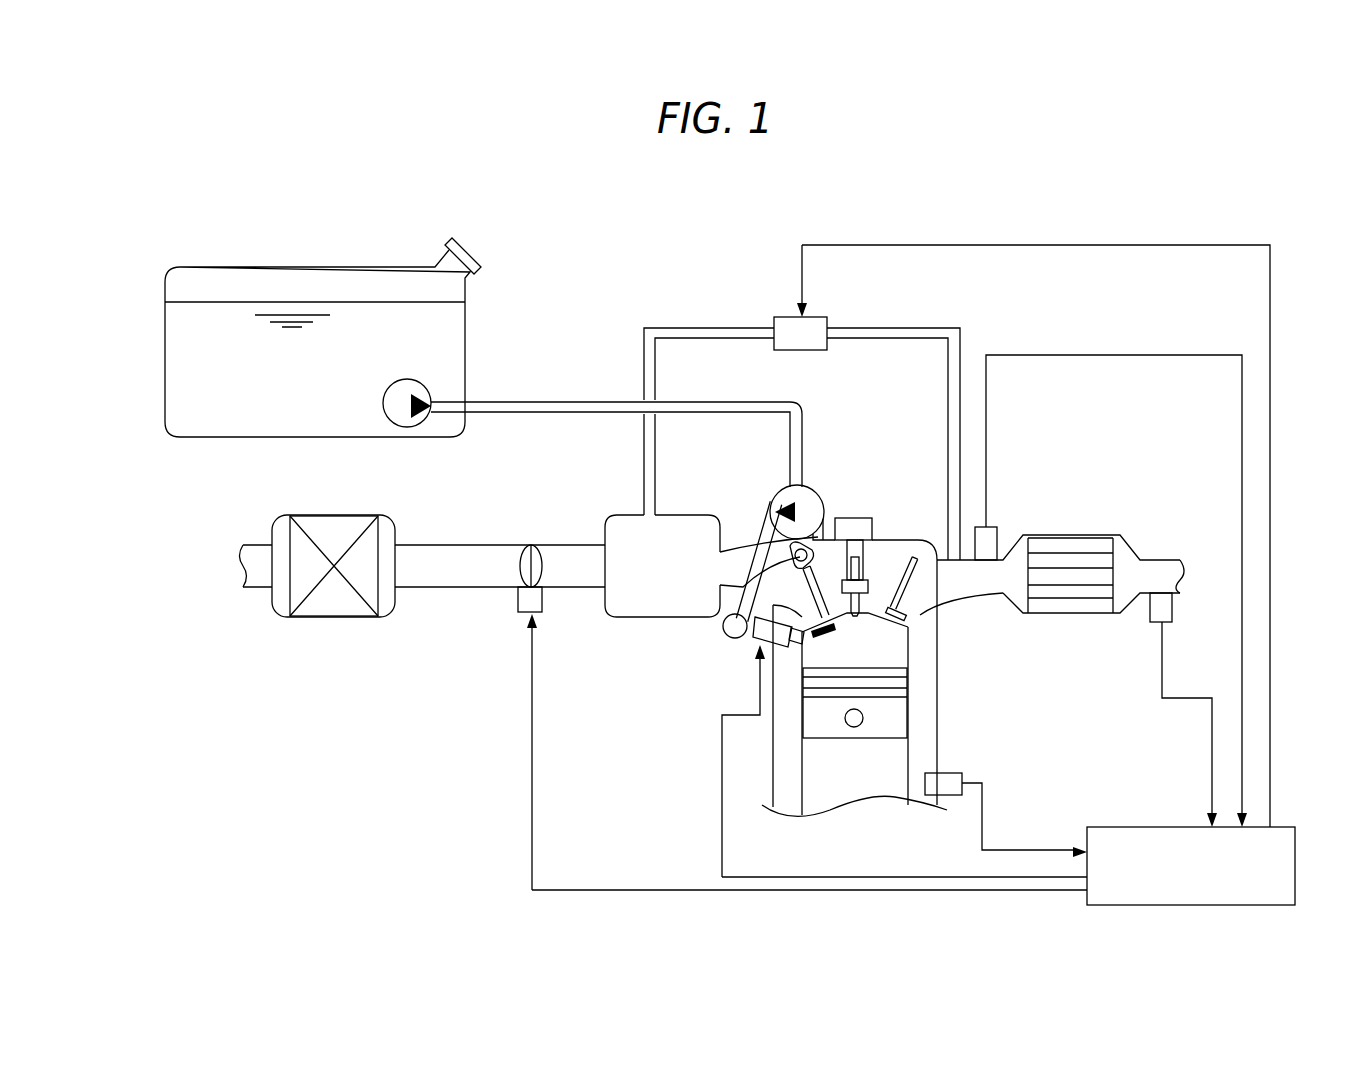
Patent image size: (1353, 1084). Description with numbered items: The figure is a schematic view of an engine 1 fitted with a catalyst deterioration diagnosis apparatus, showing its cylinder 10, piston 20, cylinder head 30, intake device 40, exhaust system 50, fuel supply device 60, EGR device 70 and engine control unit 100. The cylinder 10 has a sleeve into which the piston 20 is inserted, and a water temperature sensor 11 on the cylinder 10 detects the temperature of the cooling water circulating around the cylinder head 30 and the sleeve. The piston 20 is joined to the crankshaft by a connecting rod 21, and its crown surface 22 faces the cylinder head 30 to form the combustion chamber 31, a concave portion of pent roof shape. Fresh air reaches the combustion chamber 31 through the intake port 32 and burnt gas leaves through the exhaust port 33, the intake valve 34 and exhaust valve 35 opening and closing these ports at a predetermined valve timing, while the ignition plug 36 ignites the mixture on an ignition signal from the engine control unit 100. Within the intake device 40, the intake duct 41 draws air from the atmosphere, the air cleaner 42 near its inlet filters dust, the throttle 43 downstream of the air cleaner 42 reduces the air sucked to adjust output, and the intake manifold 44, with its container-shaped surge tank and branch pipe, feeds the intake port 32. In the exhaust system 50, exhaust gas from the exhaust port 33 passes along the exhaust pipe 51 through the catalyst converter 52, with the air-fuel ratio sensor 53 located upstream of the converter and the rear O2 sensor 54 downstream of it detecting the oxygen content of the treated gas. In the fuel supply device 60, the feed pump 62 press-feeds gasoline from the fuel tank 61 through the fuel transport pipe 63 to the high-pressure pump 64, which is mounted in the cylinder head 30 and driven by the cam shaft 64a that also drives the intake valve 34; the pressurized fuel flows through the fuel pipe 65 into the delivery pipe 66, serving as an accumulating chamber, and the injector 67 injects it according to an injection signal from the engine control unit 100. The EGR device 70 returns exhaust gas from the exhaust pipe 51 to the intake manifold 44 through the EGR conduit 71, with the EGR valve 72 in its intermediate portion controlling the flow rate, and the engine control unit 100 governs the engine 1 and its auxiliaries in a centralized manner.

The engine 1 is at (759, 284).
The cylinder 10 is at (793, 770).
The water temperature sensor 11 is at (962, 783).
The piston 20 is at (807, 727).
The connecting rod 21 is at (870, 772).
The crown surface 22 is at (870, 668).
The cylinder head 30 is at (892, 540).
The combustion chamber 31 is at (885, 641).
The intake port 32 is at (807, 625).
The exhaust port 33 is at (918, 607).
The intake valve 34 is at (824, 606).
The exhaust valve 35 is at (892, 612).
The ignition plug 36 is at (857, 582).
The intake device 40 is at (215, 503).
The intake duct 41 is at (443, 587).
The air cleaner 42 is at (305, 617).
The throttle 43 is at (528, 582).
The intake manifold 44 is at (645, 617).
The exhaust system 50 is at (1128, 497).
The exhaust pipe 51 is at (1172, 559).
The catalyst converter 52 is at (1075, 538).
The air-fuel ratio sensor 53 is at (997, 538).
The rear O2 sensor 54 is at (1152, 620).
The fuel supply device 60 is at (571, 273).
The fuel tank 61 is at (193, 267).
The feed pump 62 is at (423, 392).
The fuel transport pipe 63 is at (563, 402).
The high-pressure pump 64 is at (783, 493).
The cam shaft 64a is at (793, 550).
The fuel pipe 65 is at (742, 598).
The delivery pipe 66 is at (727, 630).
The injector 67 is at (753, 638).
The EGR device 70 is at (697, 300).
The EGR conduit 71 is at (889, 328).
The EGR valve 72 is at (815, 318).
The engine control unit 100 is at (1185, 827).